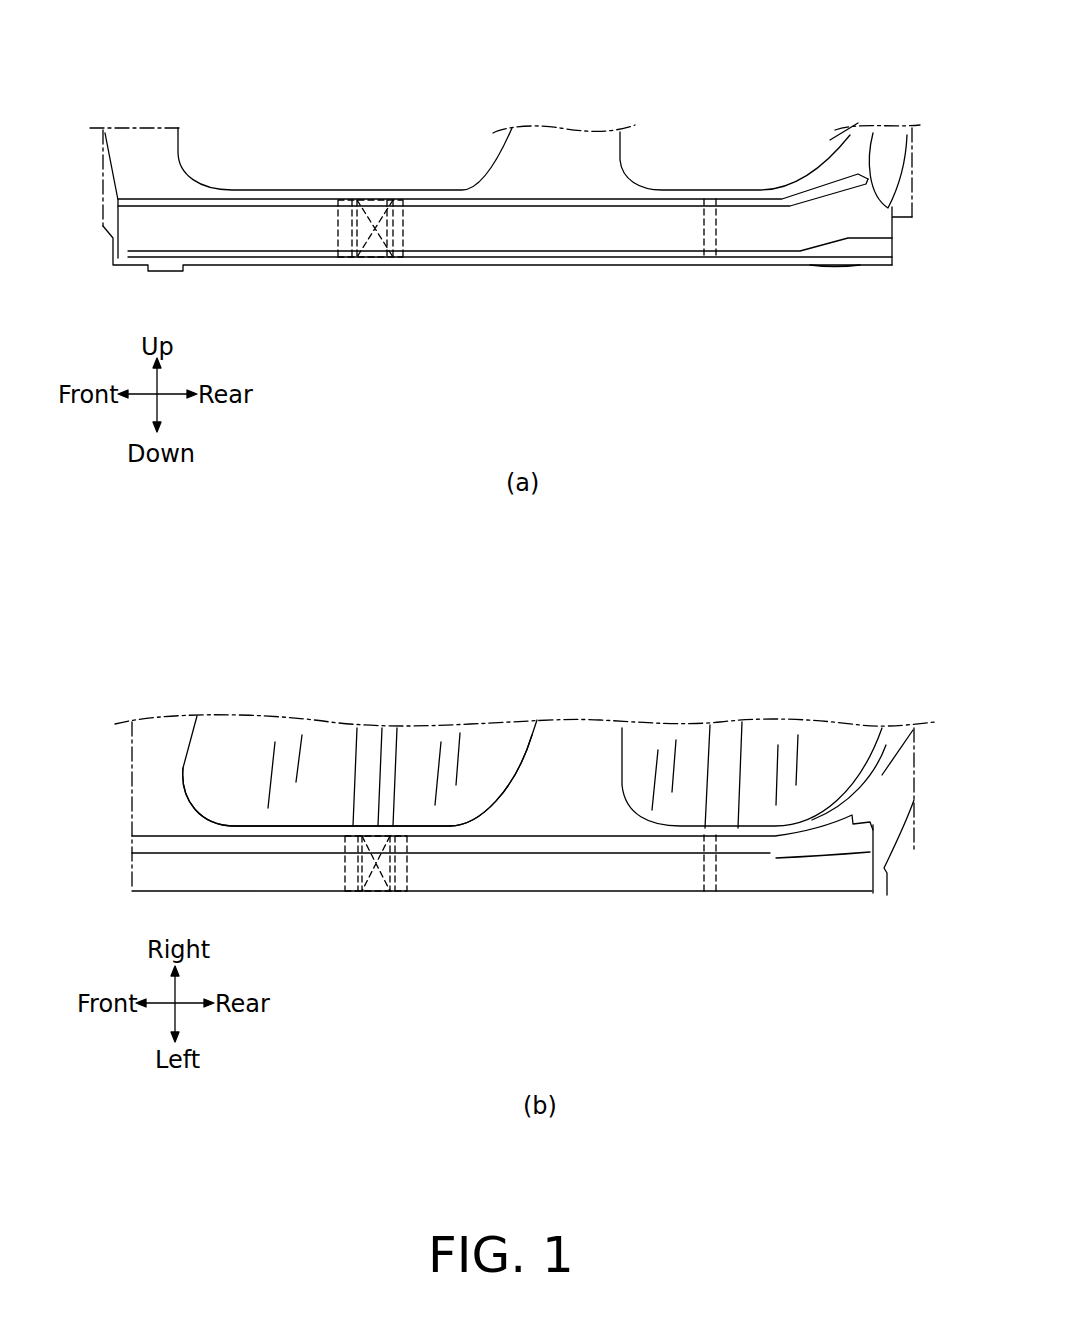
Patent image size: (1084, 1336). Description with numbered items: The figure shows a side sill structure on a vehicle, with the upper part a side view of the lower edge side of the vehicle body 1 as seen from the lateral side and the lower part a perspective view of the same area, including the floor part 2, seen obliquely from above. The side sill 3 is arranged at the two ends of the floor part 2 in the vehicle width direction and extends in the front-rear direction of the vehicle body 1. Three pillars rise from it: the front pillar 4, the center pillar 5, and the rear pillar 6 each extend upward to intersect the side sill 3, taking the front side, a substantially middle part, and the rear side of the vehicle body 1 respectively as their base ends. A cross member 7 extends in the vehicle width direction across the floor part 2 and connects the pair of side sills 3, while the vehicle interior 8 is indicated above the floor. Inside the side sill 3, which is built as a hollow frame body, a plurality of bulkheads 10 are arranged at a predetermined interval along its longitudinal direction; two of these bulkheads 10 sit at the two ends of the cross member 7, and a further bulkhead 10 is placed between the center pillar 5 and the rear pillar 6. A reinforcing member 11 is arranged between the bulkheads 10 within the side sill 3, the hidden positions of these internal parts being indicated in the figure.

The vehicle body 1 is at (384, 70).
The floor part 2 is at (290, 752).
The side sill 3 is at (323, 188).
The front pillar 4 is at (160, 136).
The center pillar 5 is at (562, 147).
The rear pillar 6 is at (840, 152).
The cross member 7 is at (362, 753).
The vehicle interior 8 is at (478, 735).
The bulkhead 10 is at (397, 262).
The reinforcing member 11 is at (372, 198).